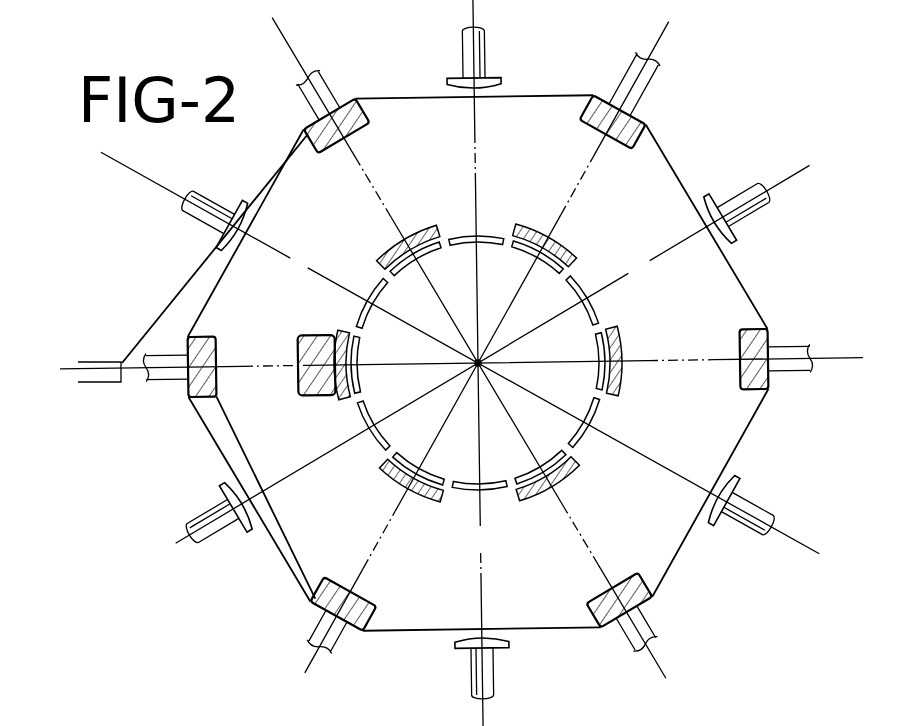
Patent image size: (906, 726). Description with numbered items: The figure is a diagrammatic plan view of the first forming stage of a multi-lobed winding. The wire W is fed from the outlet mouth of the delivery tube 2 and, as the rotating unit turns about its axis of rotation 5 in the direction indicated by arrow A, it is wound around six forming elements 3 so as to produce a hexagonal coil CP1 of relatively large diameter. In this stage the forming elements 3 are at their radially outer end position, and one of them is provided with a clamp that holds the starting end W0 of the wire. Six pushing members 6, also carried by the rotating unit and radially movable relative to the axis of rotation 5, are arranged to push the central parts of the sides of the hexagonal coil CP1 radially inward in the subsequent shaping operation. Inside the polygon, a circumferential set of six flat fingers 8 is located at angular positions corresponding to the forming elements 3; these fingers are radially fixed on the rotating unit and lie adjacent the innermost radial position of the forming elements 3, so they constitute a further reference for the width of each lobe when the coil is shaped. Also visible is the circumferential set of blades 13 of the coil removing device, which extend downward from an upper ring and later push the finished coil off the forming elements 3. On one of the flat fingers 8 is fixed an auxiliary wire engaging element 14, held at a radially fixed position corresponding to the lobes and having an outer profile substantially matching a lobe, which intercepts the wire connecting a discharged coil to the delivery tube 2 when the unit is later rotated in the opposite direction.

The delivery tube 2 is at (95, 383).
The forming elements 3 is at (618, 143).
The axis of rotation 5 is at (482, 364).
The pushing members 6 is at (465, 57).
The flat fingers 8 is at (621, 333).
The blades 13 is at (470, 240).
The auxiliary wire engaging element 14 is at (313, 396).
The wire W is at (167, 310).
The starting end of the wire W0 is at (247, 358).
The direction of rotation A is at (720, 78).
The hexagonal coil CP1 is at (197, 428).